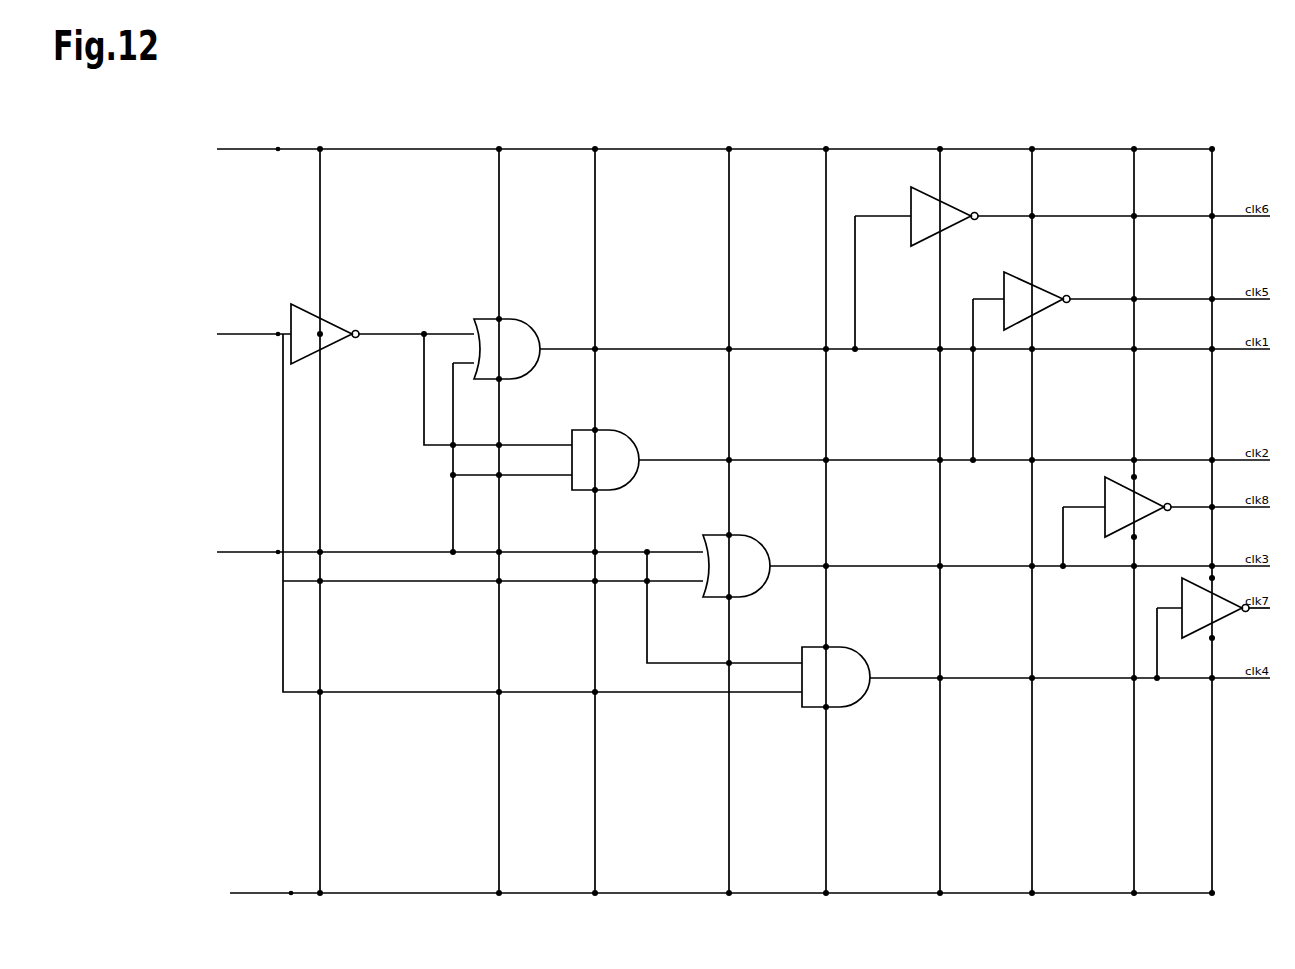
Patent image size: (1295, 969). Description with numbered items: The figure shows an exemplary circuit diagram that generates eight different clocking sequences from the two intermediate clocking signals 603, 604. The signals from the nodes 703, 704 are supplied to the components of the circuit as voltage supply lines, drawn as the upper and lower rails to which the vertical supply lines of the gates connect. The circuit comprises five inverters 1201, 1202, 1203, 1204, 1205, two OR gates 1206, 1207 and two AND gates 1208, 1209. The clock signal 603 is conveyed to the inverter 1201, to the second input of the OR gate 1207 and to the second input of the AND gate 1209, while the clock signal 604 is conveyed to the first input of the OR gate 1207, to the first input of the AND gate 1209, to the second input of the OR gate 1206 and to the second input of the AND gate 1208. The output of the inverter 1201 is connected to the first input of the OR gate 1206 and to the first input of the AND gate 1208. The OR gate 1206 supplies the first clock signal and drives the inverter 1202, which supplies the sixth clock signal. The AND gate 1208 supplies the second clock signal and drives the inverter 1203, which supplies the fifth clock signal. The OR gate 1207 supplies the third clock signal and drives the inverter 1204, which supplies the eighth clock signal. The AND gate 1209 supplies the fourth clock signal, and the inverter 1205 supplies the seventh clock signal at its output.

The node 703 is at (696, 151).
The node 704 is at (696, 895).
The intermediate clocking signal 603 is at (236, 336).
The intermediate clocking signal 604 is at (442, 554).
The inverter 1201 is at (313, 319).
The inverter 1202 is at (930, 202).
The inverter 1203 is at (1027, 286).
The inverter 1204 is at (1114, 501).
The inverter 1205 is at (1224, 613).
The OR gate 1206 is at (491, 330).
The OR gate 1207 is at (723, 549).
The AND gate 1208 is at (591, 447).
The AND gate 1209 is at (822, 663).